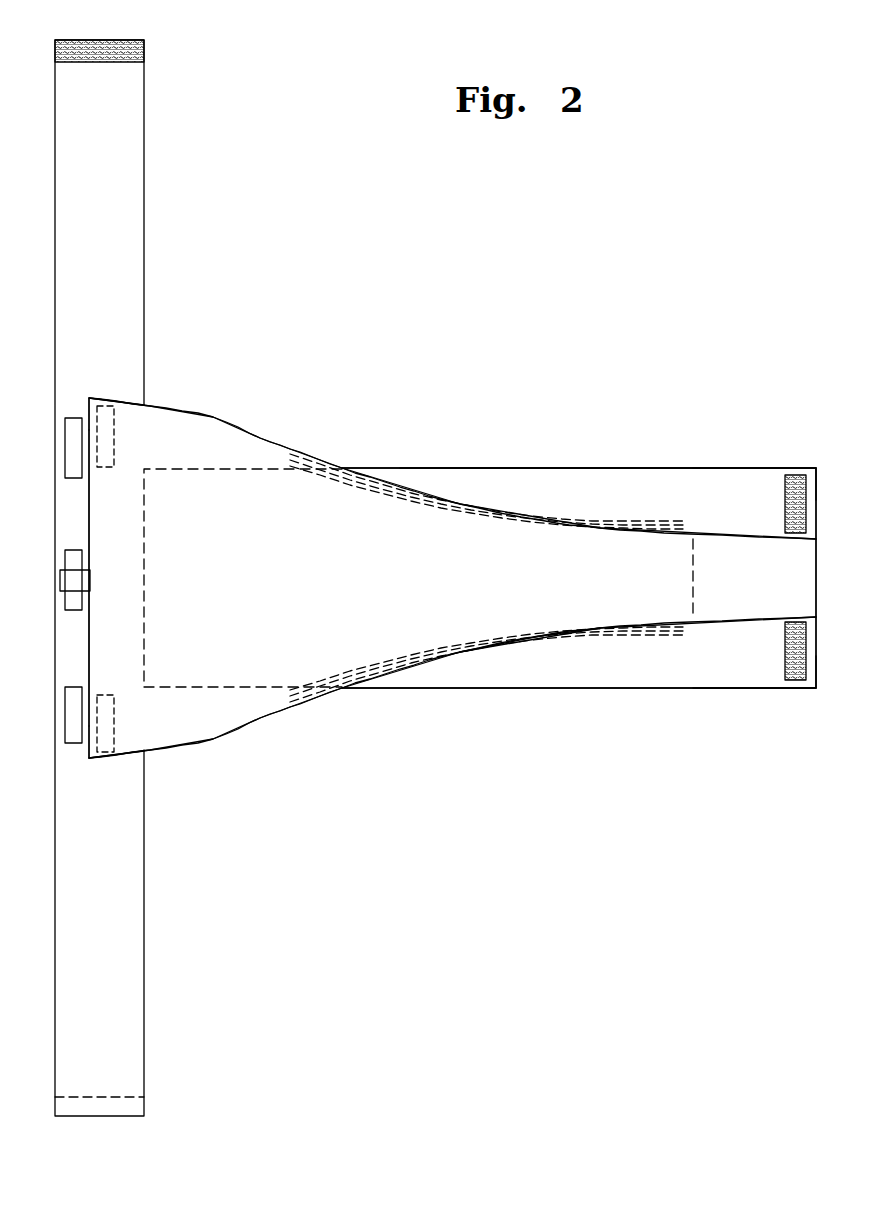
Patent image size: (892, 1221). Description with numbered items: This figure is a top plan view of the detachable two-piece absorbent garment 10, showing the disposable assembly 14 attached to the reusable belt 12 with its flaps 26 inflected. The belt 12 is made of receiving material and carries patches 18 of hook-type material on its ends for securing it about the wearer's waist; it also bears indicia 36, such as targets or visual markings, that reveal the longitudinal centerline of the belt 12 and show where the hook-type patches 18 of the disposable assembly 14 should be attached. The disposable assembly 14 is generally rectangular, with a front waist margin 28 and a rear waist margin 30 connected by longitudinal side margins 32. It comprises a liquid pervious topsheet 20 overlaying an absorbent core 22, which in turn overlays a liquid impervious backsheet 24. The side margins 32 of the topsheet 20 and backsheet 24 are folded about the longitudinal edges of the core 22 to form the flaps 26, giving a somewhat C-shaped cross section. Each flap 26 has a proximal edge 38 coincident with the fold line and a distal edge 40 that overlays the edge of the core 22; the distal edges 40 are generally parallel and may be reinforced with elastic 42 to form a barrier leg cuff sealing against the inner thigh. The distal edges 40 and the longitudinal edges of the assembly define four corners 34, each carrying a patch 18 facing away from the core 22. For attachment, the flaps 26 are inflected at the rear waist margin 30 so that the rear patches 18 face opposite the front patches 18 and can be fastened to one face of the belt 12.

The absorbent garment 10 is at (448, 230).
The reusable belt 12 is at (150, 128).
The disposable assembly 14 is at (527, 466).
The patches 18 is at (122, 40).
The topsheet 20 is at (328, 585).
The absorbent core 22 is at (603, 623).
The backsheet 24 is at (708, 510).
The flaps 26 is at (393, 477).
The front waist margin 28 is at (708, 568).
The rear waist margin 30 is at (150, 540).
The longitudinal side margins 32 is at (243, 447).
The corners 34 is at (89, 398).
The indicia 36 is at (73, 448).
The proximal edge 38 is at (477, 466).
The distal edge 40 is at (213, 417).
The elastic 42 is at (583, 520).